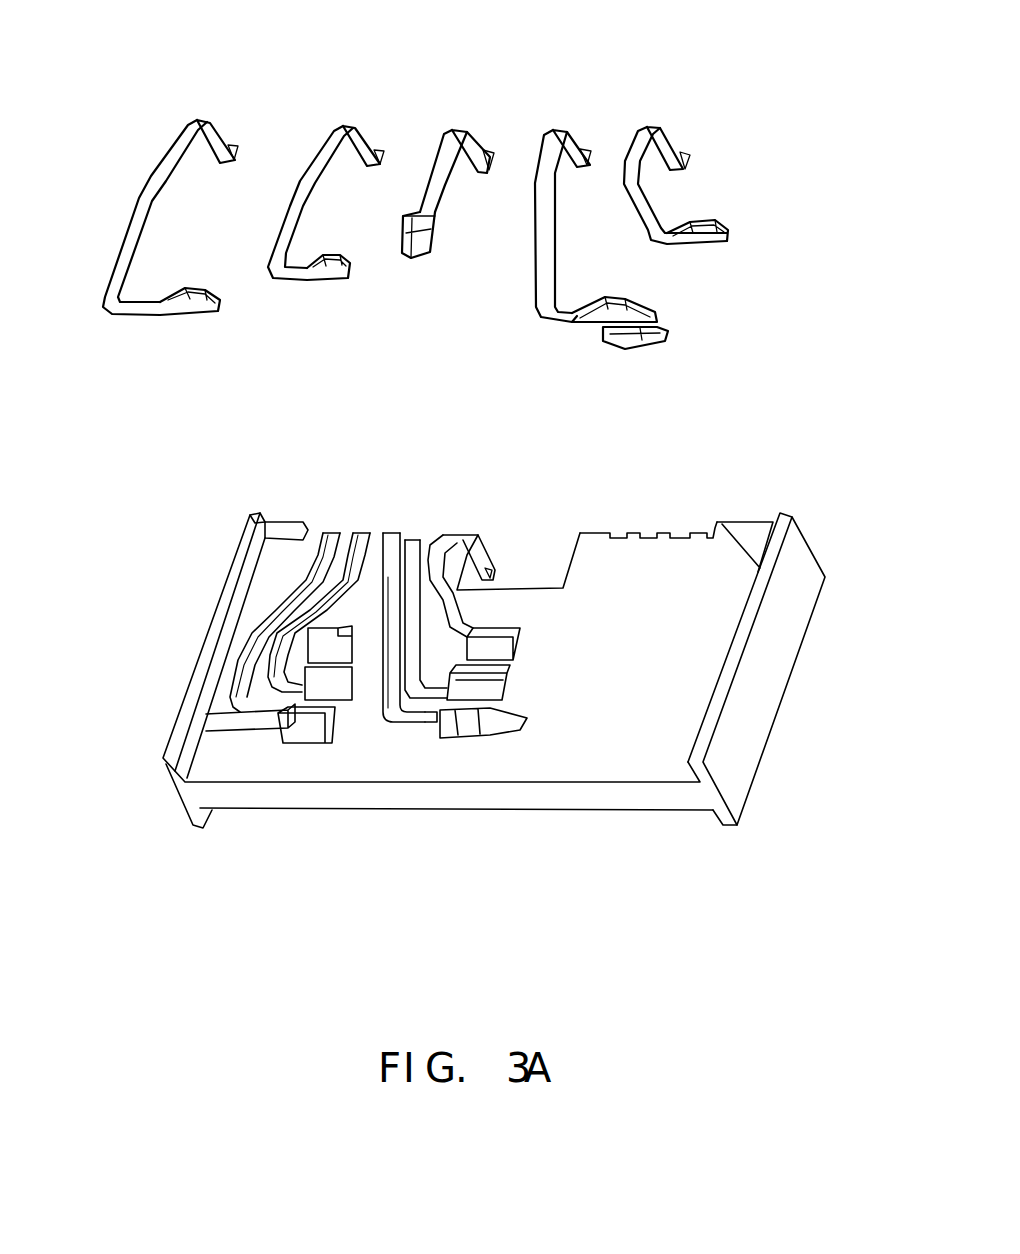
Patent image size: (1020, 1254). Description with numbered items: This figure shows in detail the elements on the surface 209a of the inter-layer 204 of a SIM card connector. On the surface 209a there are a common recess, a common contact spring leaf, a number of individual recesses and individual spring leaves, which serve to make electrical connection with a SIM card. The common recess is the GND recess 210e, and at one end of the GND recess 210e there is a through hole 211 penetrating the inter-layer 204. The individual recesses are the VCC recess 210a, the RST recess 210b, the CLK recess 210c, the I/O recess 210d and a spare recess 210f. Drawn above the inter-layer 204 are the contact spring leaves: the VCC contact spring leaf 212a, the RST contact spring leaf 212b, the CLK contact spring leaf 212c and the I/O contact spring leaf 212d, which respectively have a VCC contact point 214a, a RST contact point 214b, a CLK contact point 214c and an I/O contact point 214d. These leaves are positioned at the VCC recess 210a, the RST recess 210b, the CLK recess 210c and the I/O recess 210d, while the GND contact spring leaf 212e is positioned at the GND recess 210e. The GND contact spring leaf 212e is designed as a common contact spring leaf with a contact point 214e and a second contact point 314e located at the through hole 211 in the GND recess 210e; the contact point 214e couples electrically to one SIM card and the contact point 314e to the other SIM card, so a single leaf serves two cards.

The VCC contact spring leaf 212a is at (170, 190).
The RST contact spring leaf 212b is at (310, 197).
The CLK contact spring leaf 212c is at (440, 177).
The I/O contact spring leaf 212d is at (643, 150).
The GND contact spring leaf 212e is at (547, 180).
The VCC contact point 214a is at (201, 297).
The RST contact point 214b is at (330, 277).
The CLK contact point 214c is at (431, 234).
The I/O contact point 214d is at (707, 235).
The contact point 214e is at (612, 300).
The contact point 314e is at (623, 347).
The VCC recess 210a is at (297, 757).
The RST recess 210b is at (279, 706).
The CLK recess 210c is at (299, 633).
The I/O recess 210d is at (533, 641).
The GND recess 210e is at (413, 748).
The spare recess 210f is at (519, 694).
The through hole 211 is at (480, 742).
The inter-layer 204 is at (753, 688).
The surface 209a is at (600, 760).